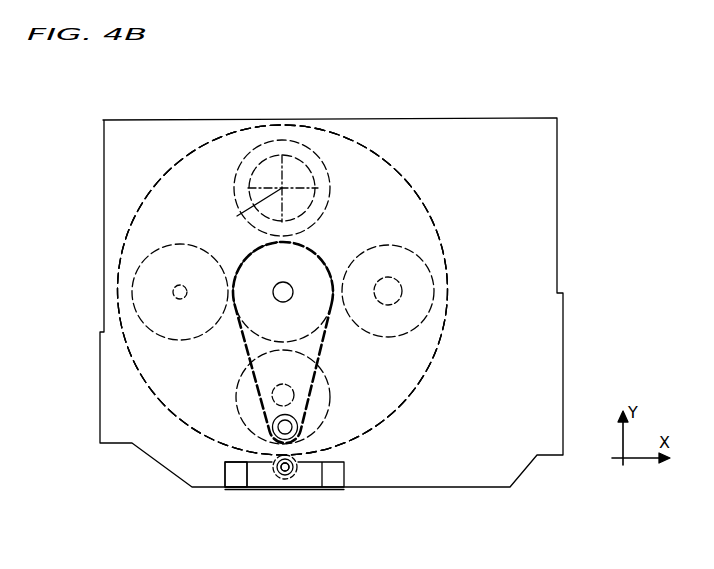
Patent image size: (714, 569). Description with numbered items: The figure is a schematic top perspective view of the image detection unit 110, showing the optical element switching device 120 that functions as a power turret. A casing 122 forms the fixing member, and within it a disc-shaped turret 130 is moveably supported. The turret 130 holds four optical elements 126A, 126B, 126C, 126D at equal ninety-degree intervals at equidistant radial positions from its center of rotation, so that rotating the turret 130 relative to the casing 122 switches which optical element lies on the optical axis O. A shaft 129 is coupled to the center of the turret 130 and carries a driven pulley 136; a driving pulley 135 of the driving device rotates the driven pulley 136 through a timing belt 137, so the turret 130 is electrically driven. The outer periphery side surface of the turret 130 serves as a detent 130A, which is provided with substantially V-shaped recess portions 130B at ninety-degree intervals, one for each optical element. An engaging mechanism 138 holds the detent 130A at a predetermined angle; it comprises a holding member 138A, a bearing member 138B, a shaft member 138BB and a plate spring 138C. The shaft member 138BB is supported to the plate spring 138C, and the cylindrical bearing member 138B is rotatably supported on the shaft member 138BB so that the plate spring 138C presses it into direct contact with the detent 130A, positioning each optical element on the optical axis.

The image detection unit 110 is at (338, 107).
The optical element switching device 120 is at (423, 182).
The casing 122 is at (488, 128).
The turret 130 is at (405, 222).
The detent 130A is at (433, 358).
The recess portions 130B is at (282, 127).
The optical element 126A is at (322, 403).
The optical element 126B is at (140, 273).
The optical element 126C is at (307, 172).
The optical element 126D is at (415, 281).
The driven pulley 136 is at (308, 260).
The shaft 129 is at (283, 293).
The timing belt 137 is at (320, 351).
The driving pulley 135 is at (298, 427).
The engaging mechanism 138 is at (362, 470).
The holding member 138A is at (235, 478).
The bearing member 138B is at (290, 478).
The shaft member 138BB is at (282, 478).
The plate spring 138C is at (294, 458).